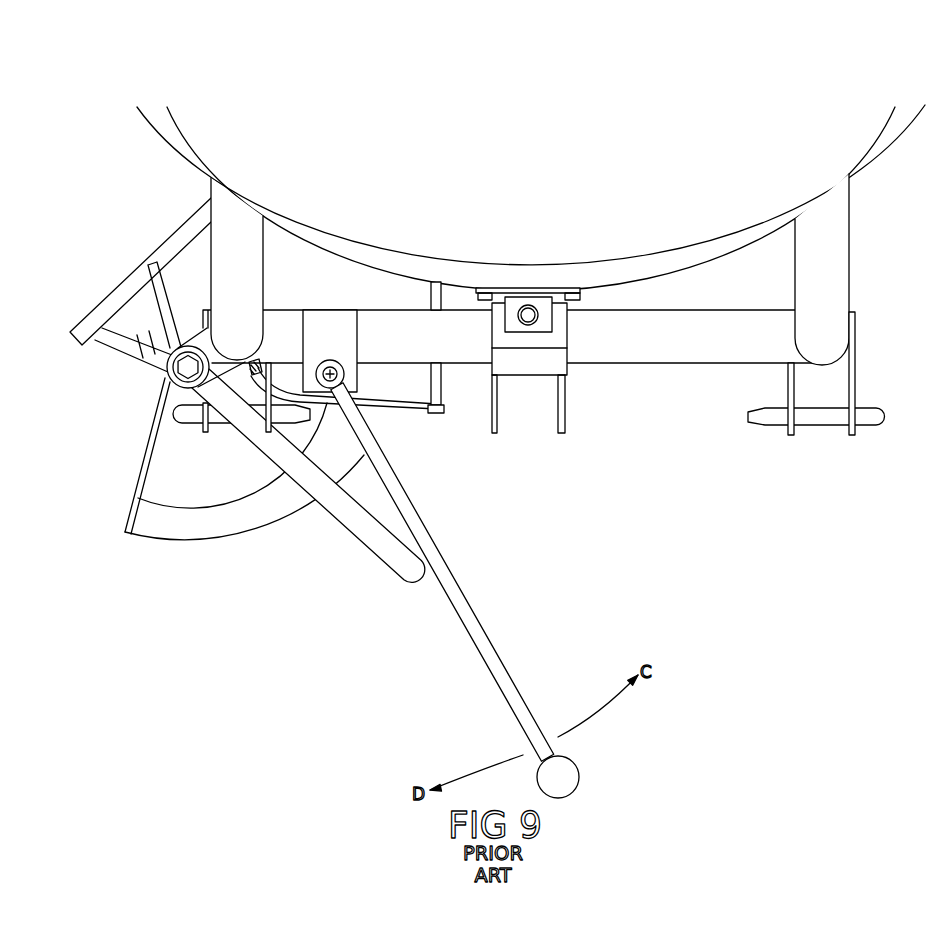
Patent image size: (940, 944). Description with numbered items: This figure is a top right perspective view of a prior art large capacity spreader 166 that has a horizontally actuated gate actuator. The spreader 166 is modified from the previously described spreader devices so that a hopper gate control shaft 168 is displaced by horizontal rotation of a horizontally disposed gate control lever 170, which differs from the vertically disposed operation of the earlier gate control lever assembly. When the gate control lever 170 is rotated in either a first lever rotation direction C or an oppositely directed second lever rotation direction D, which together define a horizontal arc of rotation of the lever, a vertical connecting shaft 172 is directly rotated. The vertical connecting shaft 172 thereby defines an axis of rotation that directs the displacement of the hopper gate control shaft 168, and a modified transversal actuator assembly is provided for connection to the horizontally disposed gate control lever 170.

The large capacity spreader 166 is at (587, 395).
The hopper gate control shaft 168 is at (437, 392).
The horizontally disposed gate control lever 170 is at (498, 663).
The vertical connecting shaft 172 is at (370, 432).